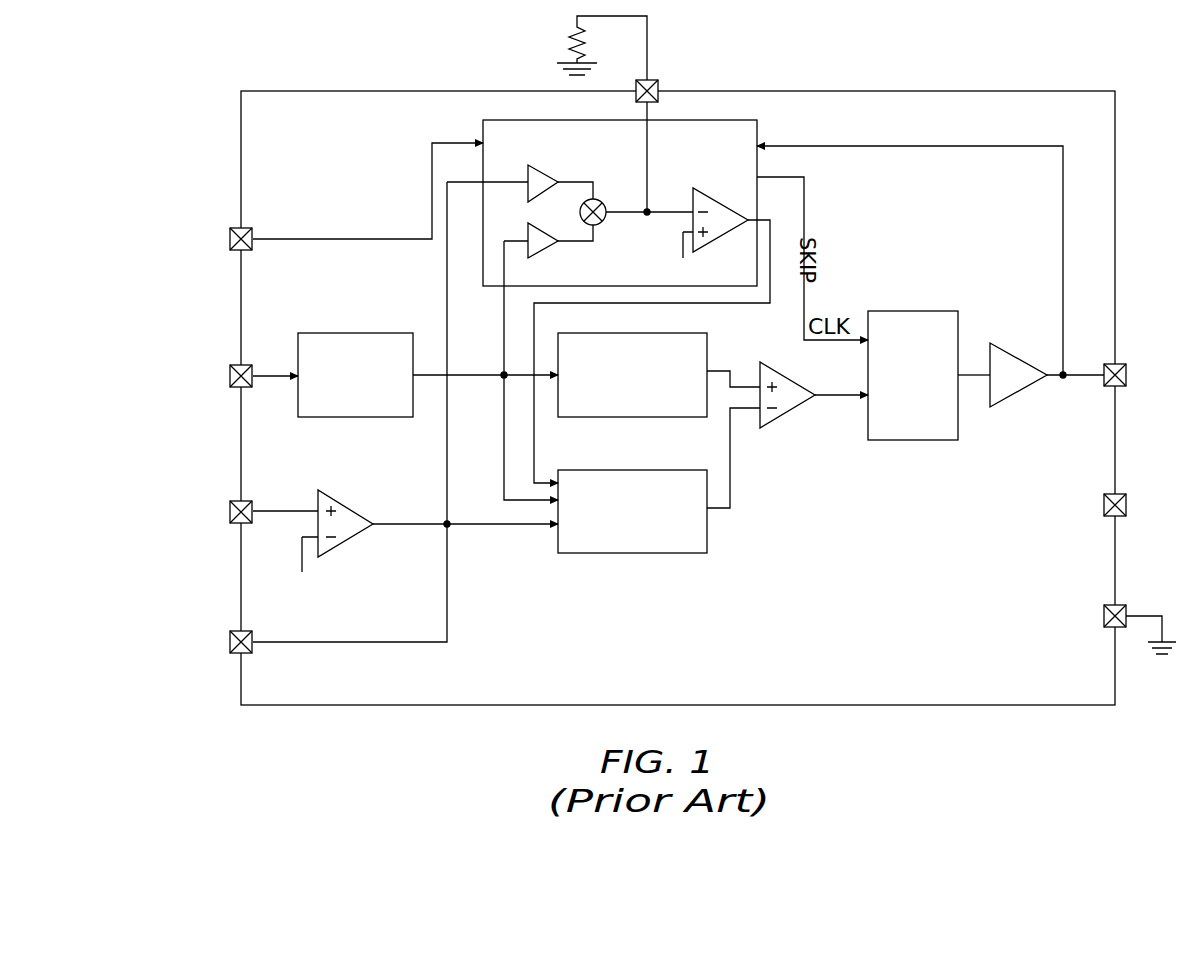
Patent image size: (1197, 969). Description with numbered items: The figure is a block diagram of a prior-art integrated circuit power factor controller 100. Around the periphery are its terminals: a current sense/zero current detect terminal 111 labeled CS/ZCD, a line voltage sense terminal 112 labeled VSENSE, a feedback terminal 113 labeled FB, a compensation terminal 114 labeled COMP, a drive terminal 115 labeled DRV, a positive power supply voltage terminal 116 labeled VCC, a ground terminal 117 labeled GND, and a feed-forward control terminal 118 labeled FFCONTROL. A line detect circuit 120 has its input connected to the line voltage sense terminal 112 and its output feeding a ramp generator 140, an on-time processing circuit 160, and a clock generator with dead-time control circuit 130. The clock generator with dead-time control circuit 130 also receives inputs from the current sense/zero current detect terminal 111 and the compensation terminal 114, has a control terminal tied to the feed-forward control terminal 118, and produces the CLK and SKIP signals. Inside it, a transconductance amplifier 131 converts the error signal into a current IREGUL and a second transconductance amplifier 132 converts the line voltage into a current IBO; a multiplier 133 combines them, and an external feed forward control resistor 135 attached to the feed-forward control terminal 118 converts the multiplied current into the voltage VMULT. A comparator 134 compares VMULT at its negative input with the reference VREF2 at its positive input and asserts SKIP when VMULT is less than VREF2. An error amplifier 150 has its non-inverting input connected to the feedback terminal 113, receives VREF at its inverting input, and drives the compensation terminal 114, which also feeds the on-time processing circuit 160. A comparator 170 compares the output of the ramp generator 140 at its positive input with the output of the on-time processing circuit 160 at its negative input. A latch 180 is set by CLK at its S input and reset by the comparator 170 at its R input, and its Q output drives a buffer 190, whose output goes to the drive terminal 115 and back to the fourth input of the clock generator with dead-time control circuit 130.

The integrated circuit power factor controller 100 is at (241, 148).
The current sense/zero current detect terminal 111 is at (253, 232).
The line voltage sense terminal 112 is at (253, 364).
The feedback terminal 113 is at (253, 500).
The compensation terminal 114 is at (253, 651).
The drive terminal 115 is at (1103, 388).
The positive power supply voltage terminal 116 is at (1103, 500).
The ground terminal 117 is at (1103, 612).
The feed-forward control terminal 118 is at (637, 82).
The line detect circuit 120 is at (368, 333).
The clock generator with dead-time control circuit 130 is at (483, 135).
The transconductance amplifier 131 is at (528, 167).
The transconductance amplifier 132 is at (528, 226).
The multiplier 133 is at (601, 205).
The comparator 134 is at (694, 190).
The external feed forward control resistor 135 is at (570, 50).
The ramp generator 140 is at (709, 345).
The error amplifier 150 is at (345, 503).
The on-time processing circuit 160 is at (707, 535).
The comparator 170 is at (780, 416).
The latch 180 is at (895, 311).
The buffer 190 is at (1003, 350).